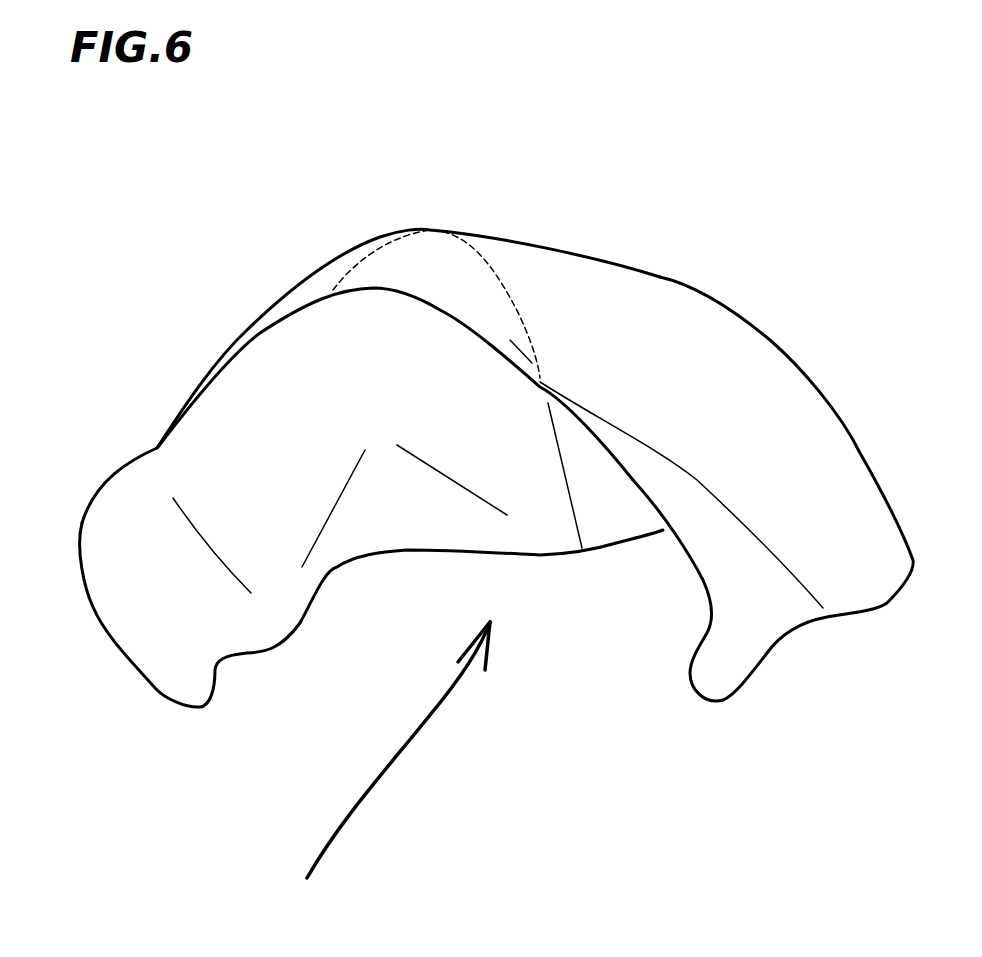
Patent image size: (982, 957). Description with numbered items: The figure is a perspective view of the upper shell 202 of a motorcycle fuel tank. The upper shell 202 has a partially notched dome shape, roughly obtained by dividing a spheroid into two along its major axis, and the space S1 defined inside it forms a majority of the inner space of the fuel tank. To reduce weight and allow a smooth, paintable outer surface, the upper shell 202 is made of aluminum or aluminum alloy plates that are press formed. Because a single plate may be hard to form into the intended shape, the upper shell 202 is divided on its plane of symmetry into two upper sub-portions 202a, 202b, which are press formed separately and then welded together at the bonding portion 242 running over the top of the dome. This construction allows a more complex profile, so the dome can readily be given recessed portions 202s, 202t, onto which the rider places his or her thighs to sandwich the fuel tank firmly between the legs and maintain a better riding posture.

The upper shell 202 is at (672, 190).
The upper sub-portion 202a is at (755, 367).
The upper sub-portion 202b is at (280, 290).
The recessed portion 202s is at (593, 367).
The recessed portion 202t is at (147, 437).
The bonding portion 242 is at (430, 230).
The space S1 is at (381, 773).